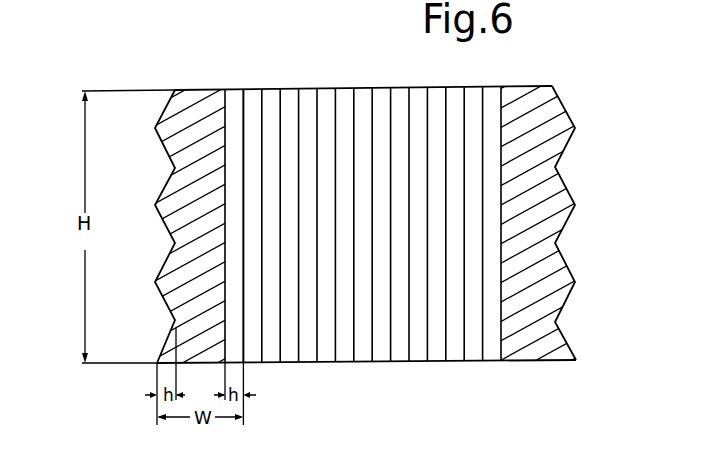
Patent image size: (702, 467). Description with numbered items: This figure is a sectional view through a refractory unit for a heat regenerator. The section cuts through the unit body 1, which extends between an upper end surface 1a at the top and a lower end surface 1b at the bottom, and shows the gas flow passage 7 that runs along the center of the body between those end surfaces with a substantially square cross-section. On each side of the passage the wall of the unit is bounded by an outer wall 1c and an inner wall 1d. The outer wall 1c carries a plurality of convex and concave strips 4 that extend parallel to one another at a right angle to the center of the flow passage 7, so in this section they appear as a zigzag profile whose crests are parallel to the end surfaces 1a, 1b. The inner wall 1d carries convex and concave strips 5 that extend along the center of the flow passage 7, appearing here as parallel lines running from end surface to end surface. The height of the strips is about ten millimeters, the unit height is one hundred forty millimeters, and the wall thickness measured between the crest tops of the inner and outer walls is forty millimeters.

The unit body 1 is at (552, 86).
The upper end surface 1a is at (502, 87).
The lower end surface 1b is at (217, 361).
The outer wall 1c is at (156, 156).
The inner wall 1d is at (245, 320).
The convex and concave strips 4 is at (155, 204).
The convex and concave strips 5 is at (243, 106).
The gas flow passage 7 is at (364, 133).